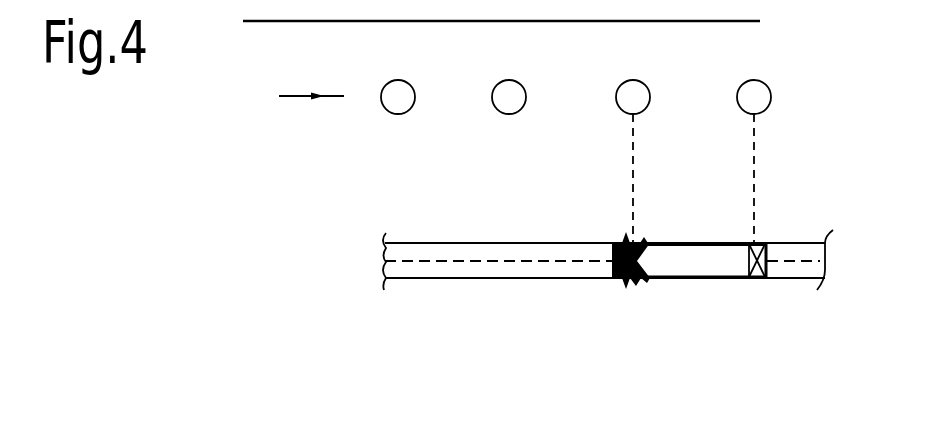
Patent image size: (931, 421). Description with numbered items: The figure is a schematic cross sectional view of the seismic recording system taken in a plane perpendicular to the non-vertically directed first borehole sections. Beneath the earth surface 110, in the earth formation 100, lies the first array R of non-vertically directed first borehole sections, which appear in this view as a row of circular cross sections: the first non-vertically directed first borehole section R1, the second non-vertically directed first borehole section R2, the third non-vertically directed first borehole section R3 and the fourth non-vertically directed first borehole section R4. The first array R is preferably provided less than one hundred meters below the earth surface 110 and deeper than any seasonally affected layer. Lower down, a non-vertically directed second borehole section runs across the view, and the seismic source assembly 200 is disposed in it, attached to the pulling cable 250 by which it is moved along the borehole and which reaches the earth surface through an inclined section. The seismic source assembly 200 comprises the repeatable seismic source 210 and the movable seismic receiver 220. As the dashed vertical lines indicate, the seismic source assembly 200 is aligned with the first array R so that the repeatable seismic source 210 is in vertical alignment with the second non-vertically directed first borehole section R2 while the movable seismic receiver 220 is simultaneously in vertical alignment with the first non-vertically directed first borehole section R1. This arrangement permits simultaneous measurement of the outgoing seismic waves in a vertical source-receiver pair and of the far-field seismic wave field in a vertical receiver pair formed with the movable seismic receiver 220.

The earth surface 110 is at (305, 22).
The first array of non-vertically directed first borehole sections R is at (300, 95).
The first non-vertically directed first borehole section R1 is at (759, 81).
The second non-vertically directed first borehole section R2 is at (641, 81).
The third non-vertically directed first borehole section R3 is at (518, 82).
The fourth non-vertically directed first borehole section R4 is at (406, 82).
The earth formation 100 is at (392, 178).
The pulling cable 250 is at (495, 260).
The seismic source assembly 200 is at (697, 262).
The repeatable seismic source 210 is at (622, 243).
The movable seismic receiver 220 is at (756, 272).